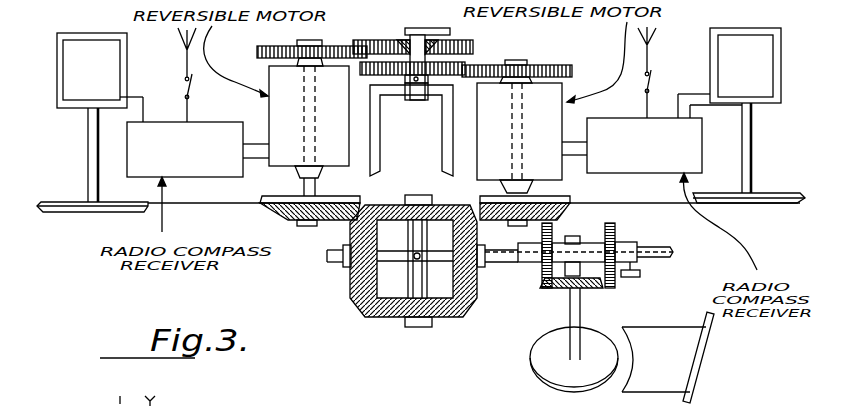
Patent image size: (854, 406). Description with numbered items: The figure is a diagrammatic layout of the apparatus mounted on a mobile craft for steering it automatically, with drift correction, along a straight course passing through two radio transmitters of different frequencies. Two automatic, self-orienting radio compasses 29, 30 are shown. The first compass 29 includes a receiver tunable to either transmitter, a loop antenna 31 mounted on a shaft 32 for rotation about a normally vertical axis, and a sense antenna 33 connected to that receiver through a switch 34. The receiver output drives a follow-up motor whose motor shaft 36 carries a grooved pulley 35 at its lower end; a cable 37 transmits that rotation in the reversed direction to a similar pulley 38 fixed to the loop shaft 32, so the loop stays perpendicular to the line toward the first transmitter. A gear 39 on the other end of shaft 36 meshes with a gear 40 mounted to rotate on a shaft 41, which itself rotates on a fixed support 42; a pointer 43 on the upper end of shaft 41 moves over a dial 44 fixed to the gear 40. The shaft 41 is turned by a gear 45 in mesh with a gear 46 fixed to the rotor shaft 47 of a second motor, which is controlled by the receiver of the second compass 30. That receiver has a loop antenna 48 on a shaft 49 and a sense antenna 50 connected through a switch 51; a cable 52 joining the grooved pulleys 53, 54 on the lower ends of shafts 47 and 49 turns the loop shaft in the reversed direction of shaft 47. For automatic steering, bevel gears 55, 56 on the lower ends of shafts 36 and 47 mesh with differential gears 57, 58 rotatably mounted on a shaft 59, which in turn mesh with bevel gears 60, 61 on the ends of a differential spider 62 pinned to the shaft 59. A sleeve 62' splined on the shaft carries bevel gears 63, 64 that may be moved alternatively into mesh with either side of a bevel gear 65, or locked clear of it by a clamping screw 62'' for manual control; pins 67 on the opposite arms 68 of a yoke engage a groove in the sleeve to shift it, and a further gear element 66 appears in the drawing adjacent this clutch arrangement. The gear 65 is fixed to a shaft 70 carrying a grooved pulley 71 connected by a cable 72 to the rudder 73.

The automatic radio compass 29 is at (80, 135).
The automatic radio compass 30 is at (753, 116).
The loop antenna 31 is at (120, 70).
The shaft 32 is at (88, 172).
The sense antenna 33 is at (185, 52).
The switch 34 is at (183, 88).
The grooved pulley 35 is at (260, 198).
The motor shaft 36 is at (304, 187).
The cable 37 is at (168, 204).
The pulley 38 is at (118, 213).
The gear 39 is at (257, 52).
The gear 40 is at (466, 65).
The shaft 41 is at (404, 100).
The fixed support 42 is at (442, 147).
The pointer 43 is at (452, 31).
The dial 44 is at (365, 40).
The gear 45 is at (365, 68).
The gear 46 is at (572, 70).
The rotor shaft 47 is at (518, 61).
The loop antenna 48 is at (773, 60).
The shaft 49 is at (752, 163).
The sense antenna 50 is at (650, 46).
The switch 51 is at (650, 84).
The cable 52 is at (627, 200).
The grooved pulley 53 is at (557, 198).
The grooved pulley 54 is at (718, 205).
The bevel gear 55 is at (286, 221).
The bevel gear 56 is at (480, 201).
The differential gear 57 is at (352, 268).
The differential gear 58 is at (480, 272).
The shaft 59 is at (327, 254).
The bevel gear 60 is at (408, 200).
The bevel gear 61 is at (390, 317).
The differential spider 62 is at (404, 259).
The sleeve 62' is at (660, 243).
The clamping screw 62'' is at (664, 275).
The bevel gear 63 is at (530, 243).
The bevel gear 64 is at (615, 229).
The bevel gear 65 is at (550, 288).
The bevel gear 66 is at (590, 290).
The pins 67 is at (588, 240).
The yoke arms 68 is at (556, 240).
The shaft 70 is at (570, 318).
The grooved pulley 71 is at (548, 345).
The cable 72 is at (664, 359).
The rudder 73 is at (707, 356).